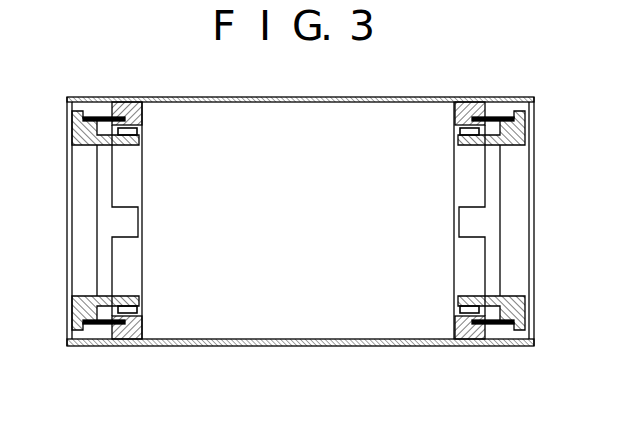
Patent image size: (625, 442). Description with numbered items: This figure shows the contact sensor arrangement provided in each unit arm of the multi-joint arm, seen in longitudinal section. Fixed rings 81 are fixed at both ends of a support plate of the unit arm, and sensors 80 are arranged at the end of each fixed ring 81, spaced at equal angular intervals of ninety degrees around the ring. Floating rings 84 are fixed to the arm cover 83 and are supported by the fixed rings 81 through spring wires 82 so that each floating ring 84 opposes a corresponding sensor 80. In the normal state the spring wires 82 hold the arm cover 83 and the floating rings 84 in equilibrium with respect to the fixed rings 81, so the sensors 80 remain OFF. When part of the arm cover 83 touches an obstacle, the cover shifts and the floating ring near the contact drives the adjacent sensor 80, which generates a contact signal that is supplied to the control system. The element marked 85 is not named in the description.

The sensor 80 is at (138, 132).
The fixed ring 81 is at (78, 133).
The spring wire 82 is at (491, 112).
The arm cover 83 is at (176, 97).
The floating ring 84 is at (456, 333).
The bearing pin 85 is at (490, 332).